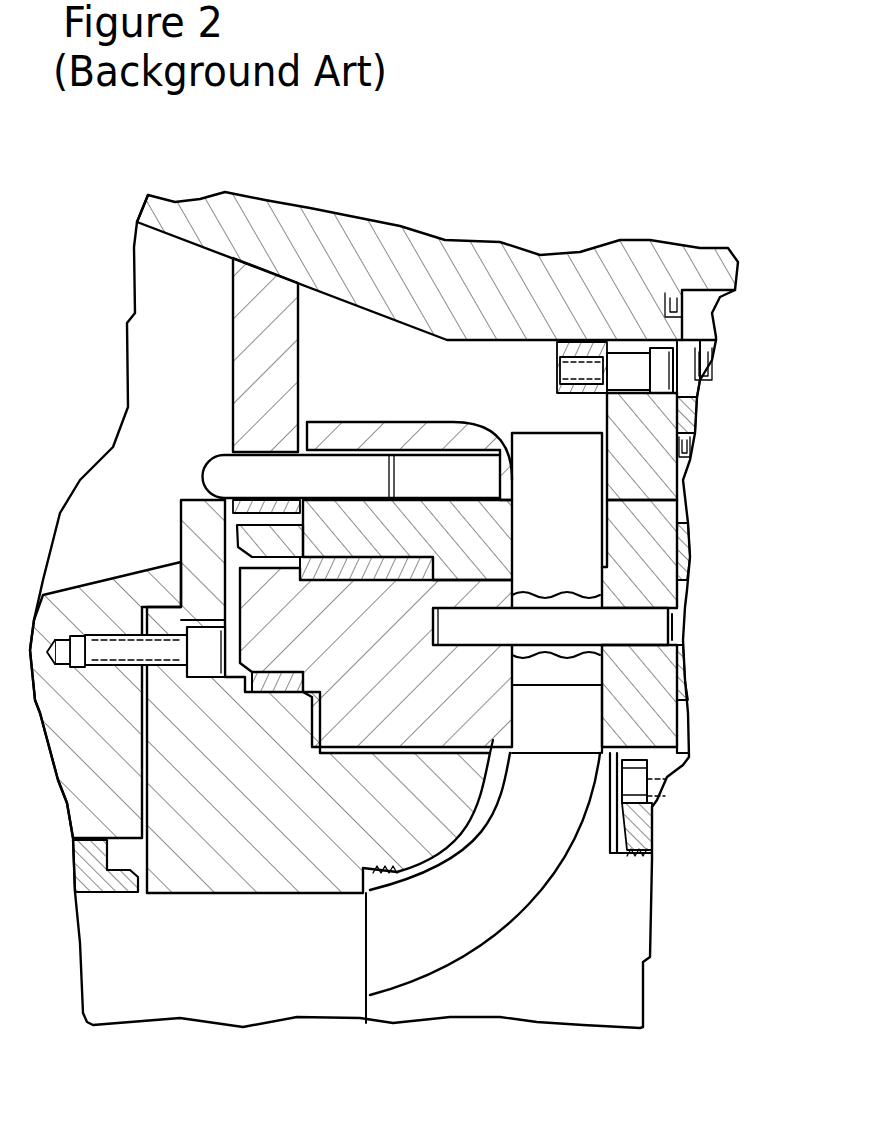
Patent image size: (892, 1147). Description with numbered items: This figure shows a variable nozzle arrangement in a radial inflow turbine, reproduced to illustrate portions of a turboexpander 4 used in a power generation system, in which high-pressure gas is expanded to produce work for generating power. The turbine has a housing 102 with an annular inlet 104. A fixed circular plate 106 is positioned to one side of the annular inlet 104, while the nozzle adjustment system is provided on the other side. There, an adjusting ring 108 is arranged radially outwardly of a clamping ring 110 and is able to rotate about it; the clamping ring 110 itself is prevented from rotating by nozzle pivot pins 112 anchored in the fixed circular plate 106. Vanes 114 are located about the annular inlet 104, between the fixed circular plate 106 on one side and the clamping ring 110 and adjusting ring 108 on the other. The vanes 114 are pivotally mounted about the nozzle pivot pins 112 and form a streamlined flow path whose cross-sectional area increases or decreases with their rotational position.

The turboexpander 4 is at (466, 131).
The housing 102 is at (620, 237).
The annular inlet 104 is at (484, 390).
The fixed circular plate 106 is at (655, 683).
The adjusting ring 108 is at (377, 420).
The clamping ring 110 is at (467, 710).
The nozzle pivot pins 112 is at (672, 627).
The vanes 114 is at (680, 500).